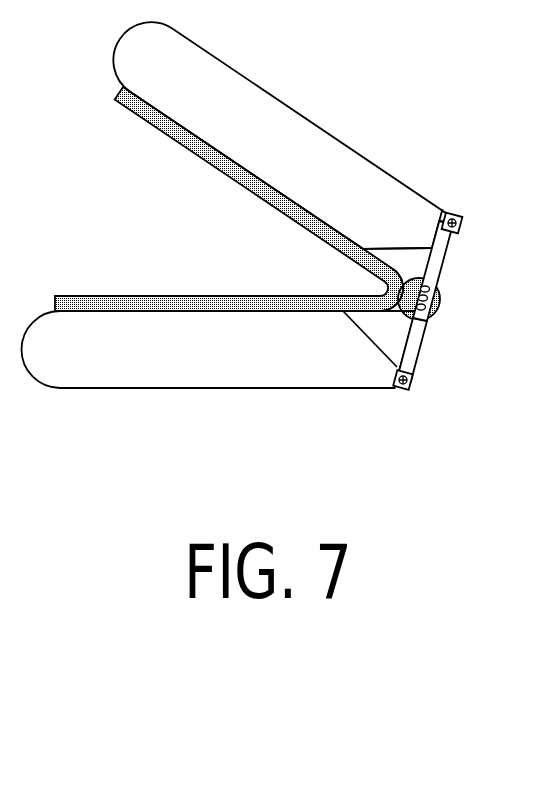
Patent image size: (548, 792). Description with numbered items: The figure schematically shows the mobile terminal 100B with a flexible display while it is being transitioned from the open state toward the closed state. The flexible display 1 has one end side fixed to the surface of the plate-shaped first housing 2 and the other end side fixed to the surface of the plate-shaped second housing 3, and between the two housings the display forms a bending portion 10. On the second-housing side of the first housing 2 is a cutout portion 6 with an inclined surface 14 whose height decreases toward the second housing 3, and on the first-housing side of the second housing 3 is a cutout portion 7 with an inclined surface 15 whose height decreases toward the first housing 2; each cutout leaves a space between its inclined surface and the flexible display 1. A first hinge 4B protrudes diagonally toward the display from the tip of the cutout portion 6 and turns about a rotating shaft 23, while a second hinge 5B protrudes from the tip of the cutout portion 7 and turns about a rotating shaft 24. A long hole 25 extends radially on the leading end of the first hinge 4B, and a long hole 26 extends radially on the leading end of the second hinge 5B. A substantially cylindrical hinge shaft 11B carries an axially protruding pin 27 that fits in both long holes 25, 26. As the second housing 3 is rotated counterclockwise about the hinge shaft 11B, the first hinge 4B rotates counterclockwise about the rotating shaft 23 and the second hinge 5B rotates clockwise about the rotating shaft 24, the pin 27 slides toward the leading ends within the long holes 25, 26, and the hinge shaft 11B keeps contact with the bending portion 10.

The mobile terminal 100B is at (406, 44).
The flexible display 1 is at (222, 297).
The first housing 2 is at (220, 389).
The second housing 3 is at (306, 118).
The first hinge 4B is at (412, 350).
The second hinge 5B is at (437, 262).
The cutout portion 6 is at (378, 358).
The cutout portion 7 is at (415, 232).
The bending portion 10 is at (386, 292).
The hinge shaft 11B is at (441, 300).
The inclined surface 14 is at (354, 338).
The inclined surface 15 is at (363, 250).
The rotating shaft 23 is at (403, 385).
The rotating shaft 24 is at (456, 220).
The long hole 25 is at (424, 310).
The long hole 26 is at (430, 289).
The pin 27 is at (428, 301).